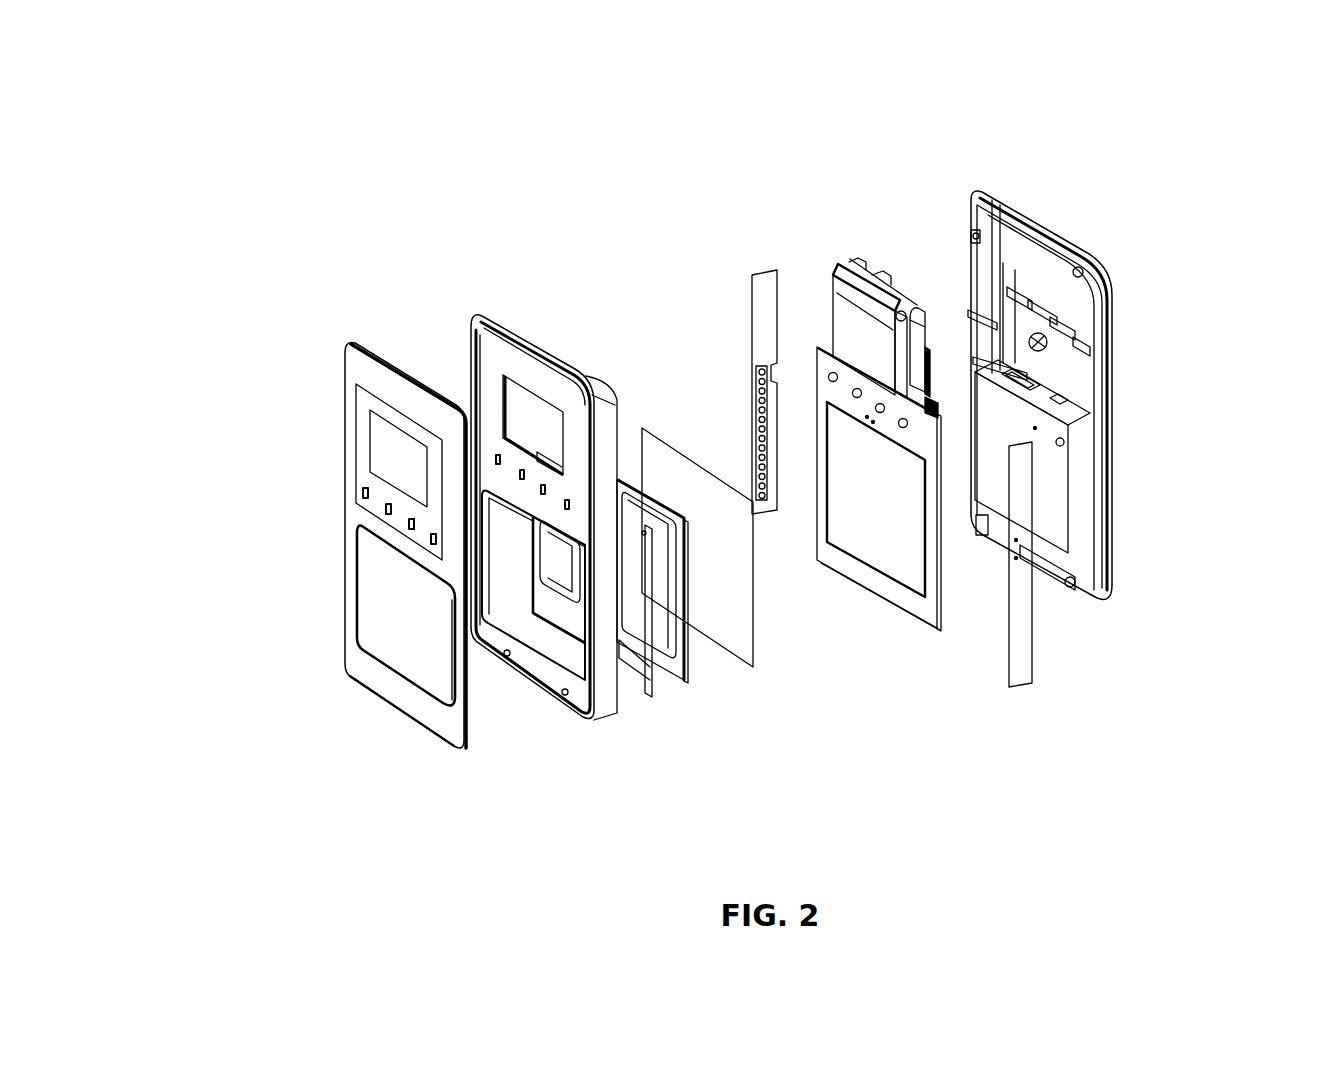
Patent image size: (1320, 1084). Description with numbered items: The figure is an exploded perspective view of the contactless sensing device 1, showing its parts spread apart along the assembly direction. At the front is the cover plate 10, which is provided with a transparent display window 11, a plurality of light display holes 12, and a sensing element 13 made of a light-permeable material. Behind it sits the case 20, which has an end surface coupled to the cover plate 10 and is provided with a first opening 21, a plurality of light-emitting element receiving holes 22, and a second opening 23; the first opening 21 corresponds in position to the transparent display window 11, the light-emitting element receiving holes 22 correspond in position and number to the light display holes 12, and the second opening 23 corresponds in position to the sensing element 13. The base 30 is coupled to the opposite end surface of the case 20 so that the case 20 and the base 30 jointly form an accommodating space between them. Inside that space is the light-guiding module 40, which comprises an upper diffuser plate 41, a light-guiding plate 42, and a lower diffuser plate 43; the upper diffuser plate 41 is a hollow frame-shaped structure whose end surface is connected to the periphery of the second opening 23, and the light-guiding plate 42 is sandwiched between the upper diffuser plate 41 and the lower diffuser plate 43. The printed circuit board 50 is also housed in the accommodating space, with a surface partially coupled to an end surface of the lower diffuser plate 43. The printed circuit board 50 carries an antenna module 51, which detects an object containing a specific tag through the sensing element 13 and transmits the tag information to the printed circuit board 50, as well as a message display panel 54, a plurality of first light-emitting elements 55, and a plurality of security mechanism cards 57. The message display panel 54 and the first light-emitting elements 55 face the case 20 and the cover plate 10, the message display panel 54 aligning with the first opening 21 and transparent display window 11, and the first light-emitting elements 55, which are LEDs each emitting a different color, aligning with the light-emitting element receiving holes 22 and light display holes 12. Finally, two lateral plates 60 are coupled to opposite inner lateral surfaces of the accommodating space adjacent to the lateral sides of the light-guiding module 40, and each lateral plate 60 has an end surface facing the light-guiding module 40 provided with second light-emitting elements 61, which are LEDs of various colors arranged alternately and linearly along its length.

The contactless sensing device 1 is at (1142, 196).
The cover plate 10 is at (382, 363).
The transparent display window 11 is at (390, 453).
The light display holes 12 is at (362, 500).
The sensing element 13 is at (397, 611).
The case 20 is at (521, 317).
The first opening 21 is at (530, 420).
The light-emitting element receiving holes 22 is at (568, 502).
The second opening 23 is at (523, 625).
The base 30 is at (1115, 382).
The light-guiding module 40 is at (766, 801).
The upper diffuser plate 41 is at (640, 692).
The light-guiding plate 42 is at (688, 670).
The lower diffuser plate 43 is at (733, 657).
The printed circuit board 50 is at (891, 529).
The antenna module 51 is at (930, 625).
The message display panel 54 is at (850, 323).
The first light-emitting elements 55 is at (904, 427).
The security mechanism cards 57 is at (922, 303).
The lateral plates 60 is at (765, 273).
The second light-emitting elements 61 is at (757, 372).